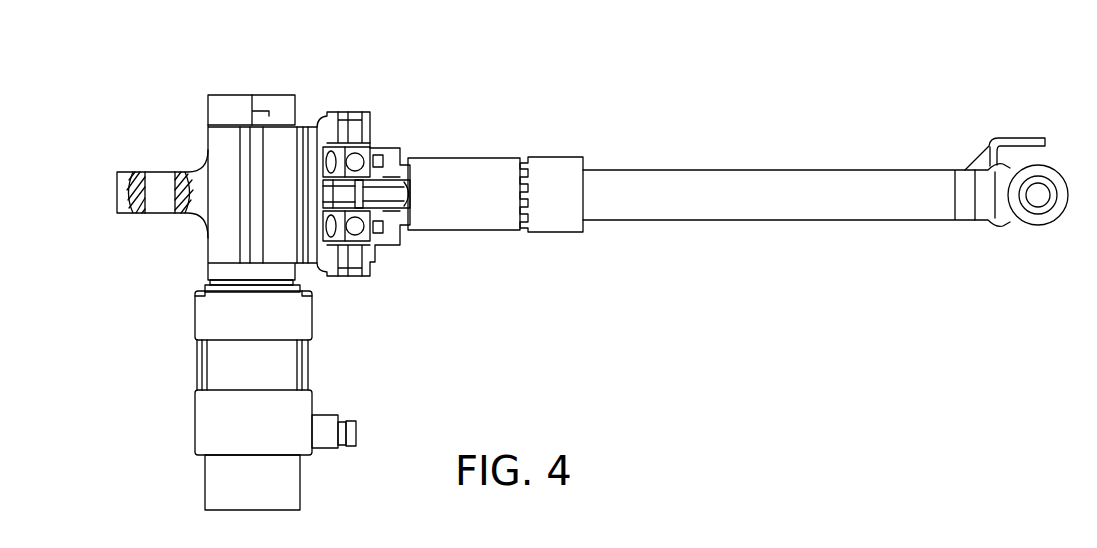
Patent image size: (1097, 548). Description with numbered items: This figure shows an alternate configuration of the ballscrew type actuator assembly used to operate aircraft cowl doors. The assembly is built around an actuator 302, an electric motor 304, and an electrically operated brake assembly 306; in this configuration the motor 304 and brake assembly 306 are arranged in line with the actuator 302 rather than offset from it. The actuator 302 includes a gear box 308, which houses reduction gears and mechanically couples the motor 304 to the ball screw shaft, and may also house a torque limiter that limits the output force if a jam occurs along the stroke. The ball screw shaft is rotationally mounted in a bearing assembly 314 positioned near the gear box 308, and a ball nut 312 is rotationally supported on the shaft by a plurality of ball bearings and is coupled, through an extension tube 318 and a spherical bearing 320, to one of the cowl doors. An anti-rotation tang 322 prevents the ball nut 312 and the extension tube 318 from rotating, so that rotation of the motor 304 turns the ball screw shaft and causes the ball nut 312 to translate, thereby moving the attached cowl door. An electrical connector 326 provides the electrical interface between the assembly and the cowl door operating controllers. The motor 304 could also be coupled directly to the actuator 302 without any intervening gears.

The actuator 302 is at (717, 103).
The electric motor 304 is at (195, 415).
The electrically operated brake assembly 306 is at (210, 497).
The gear box 308 is at (212, 146).
The ball nut 312 is at (553, 158).
The bearing assembly 314 is at (372, 143).
The extension tube 318 is at (657, 221).
The spherical bearing 320 is at (1054, 226).
The anti-rotation tang 322 is at (1012, 138).
The electrical connector 326 is at (345, 450).